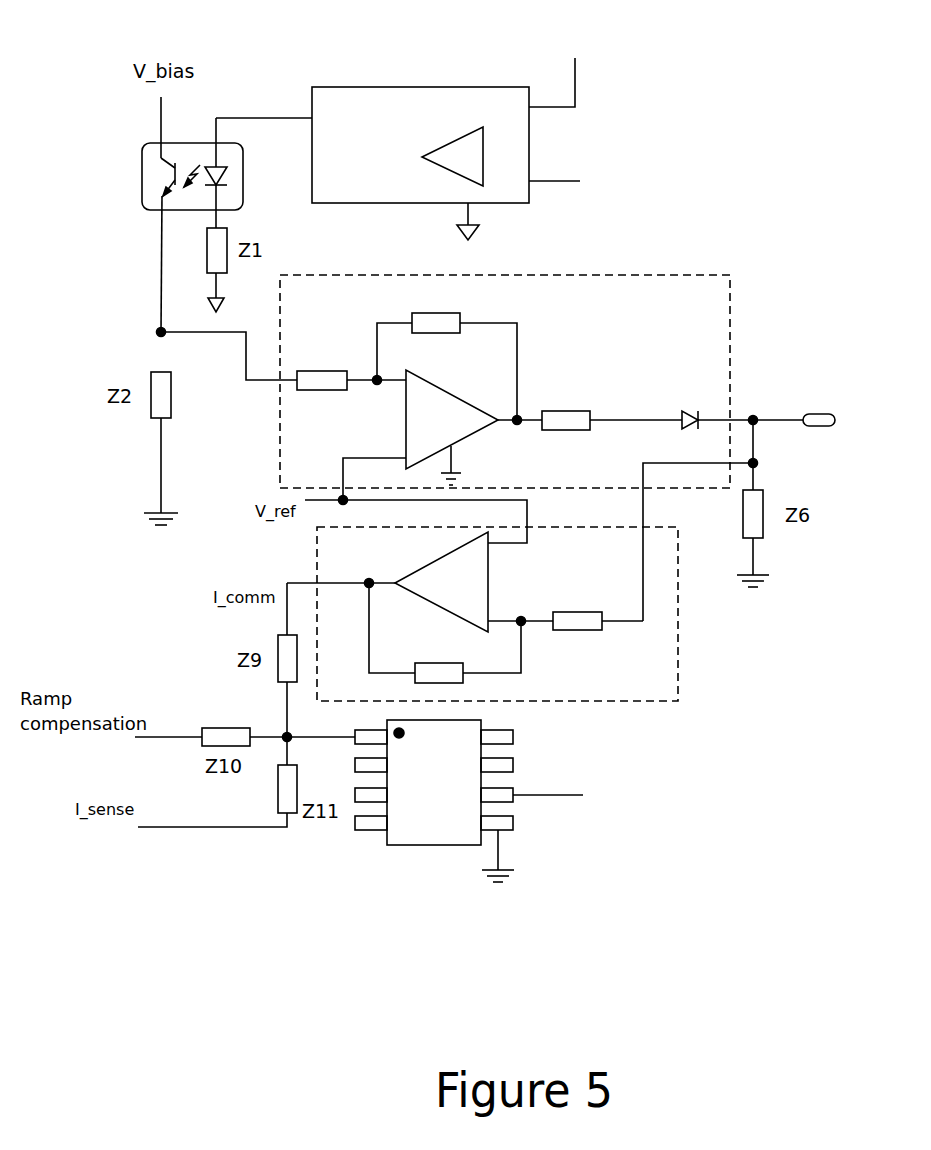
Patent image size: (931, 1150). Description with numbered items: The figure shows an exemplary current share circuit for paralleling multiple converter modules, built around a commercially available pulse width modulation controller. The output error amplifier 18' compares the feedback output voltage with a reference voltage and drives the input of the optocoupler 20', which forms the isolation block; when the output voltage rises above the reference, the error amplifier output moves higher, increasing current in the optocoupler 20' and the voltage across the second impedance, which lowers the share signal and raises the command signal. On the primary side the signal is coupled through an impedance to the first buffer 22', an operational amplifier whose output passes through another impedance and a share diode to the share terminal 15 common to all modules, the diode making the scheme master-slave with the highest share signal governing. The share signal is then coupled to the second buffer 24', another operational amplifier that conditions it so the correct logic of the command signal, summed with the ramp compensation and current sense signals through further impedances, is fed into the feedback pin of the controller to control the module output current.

The output error amplifier 18' is at (481, 131).
The optocoupler 20' is at (159, 224).
The first buffer 22' is at (541, 387).
The second buffer 24' is at (525, 614).
The I_share terminal 15 is at (835, 421).